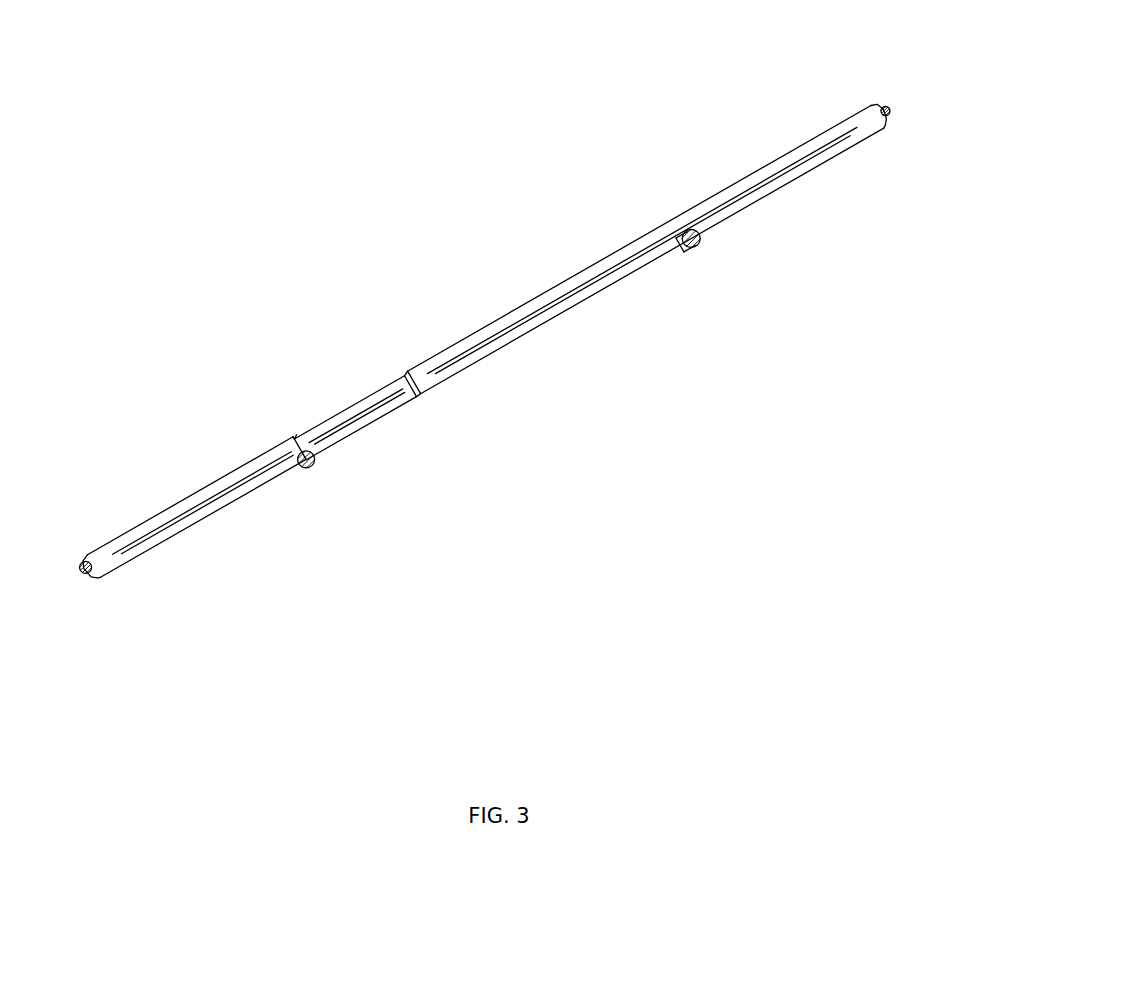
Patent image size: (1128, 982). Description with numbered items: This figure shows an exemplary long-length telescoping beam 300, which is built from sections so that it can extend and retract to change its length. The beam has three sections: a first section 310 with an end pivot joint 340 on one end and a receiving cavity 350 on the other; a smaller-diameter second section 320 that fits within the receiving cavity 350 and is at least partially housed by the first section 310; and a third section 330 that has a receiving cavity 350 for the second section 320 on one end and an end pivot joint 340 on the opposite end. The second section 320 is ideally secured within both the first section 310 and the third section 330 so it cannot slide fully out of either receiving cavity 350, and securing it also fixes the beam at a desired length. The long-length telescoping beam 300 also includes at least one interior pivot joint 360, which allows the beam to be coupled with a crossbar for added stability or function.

The long-length telescoping beam 300 is at (645, 200).
The first section 310 is at (627, 247).
The second section 320 is at (377, 417).
The third section 330 is at (211, 480).
The end pivot joint 340 is at (888, 106).
The receiving cavity 350 is at (298, 440).
The interior pivot joint 360 is at (312, 466).